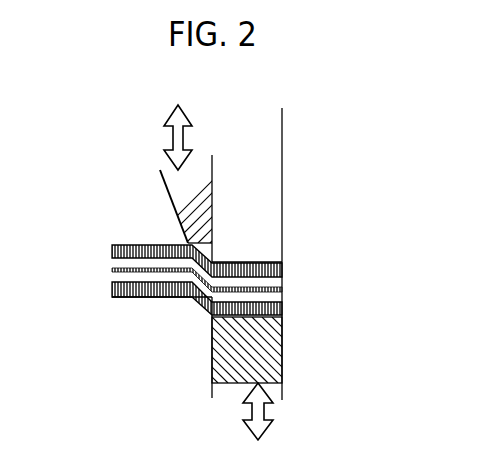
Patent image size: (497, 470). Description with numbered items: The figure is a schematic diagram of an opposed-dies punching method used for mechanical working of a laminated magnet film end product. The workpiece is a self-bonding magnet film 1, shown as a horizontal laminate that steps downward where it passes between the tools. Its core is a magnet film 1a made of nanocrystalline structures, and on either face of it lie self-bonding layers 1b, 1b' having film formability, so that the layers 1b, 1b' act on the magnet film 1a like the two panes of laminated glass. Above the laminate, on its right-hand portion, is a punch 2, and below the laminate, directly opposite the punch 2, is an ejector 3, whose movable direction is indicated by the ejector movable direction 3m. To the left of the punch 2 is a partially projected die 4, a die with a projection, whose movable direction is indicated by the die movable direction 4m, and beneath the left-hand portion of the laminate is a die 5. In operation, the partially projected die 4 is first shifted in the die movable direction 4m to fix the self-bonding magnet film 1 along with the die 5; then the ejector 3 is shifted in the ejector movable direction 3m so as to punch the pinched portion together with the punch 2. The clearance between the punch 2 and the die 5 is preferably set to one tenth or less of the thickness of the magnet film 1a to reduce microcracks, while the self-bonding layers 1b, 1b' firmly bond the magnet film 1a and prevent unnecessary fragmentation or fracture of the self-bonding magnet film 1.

The self-bonding magnet film 1 is at (149, 276).
The magnet film 1a is at (174, 273).
The self-bonding layer 1b is at (174, 240).
The self-bonding layer 1b' is at (174, 315).
The punch 2 is at (244, 199).
The ejector 3 is at (299, 352).
The ejector movable direction 3m is at (288, 411).
The partially projected die 4 is at (164, 196).
The die movable direction 4m is at (200, 137).
The die 5 is at (177, 338).